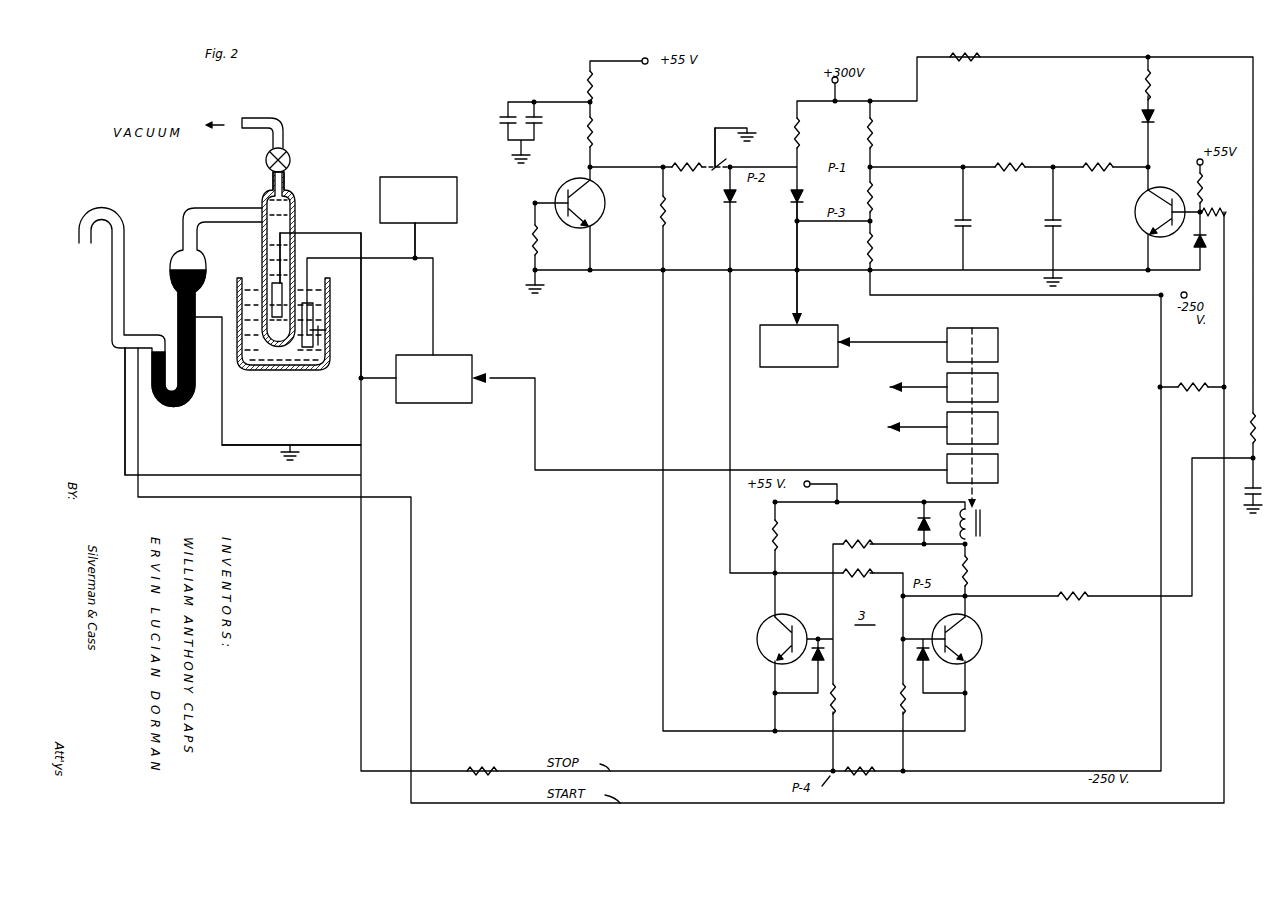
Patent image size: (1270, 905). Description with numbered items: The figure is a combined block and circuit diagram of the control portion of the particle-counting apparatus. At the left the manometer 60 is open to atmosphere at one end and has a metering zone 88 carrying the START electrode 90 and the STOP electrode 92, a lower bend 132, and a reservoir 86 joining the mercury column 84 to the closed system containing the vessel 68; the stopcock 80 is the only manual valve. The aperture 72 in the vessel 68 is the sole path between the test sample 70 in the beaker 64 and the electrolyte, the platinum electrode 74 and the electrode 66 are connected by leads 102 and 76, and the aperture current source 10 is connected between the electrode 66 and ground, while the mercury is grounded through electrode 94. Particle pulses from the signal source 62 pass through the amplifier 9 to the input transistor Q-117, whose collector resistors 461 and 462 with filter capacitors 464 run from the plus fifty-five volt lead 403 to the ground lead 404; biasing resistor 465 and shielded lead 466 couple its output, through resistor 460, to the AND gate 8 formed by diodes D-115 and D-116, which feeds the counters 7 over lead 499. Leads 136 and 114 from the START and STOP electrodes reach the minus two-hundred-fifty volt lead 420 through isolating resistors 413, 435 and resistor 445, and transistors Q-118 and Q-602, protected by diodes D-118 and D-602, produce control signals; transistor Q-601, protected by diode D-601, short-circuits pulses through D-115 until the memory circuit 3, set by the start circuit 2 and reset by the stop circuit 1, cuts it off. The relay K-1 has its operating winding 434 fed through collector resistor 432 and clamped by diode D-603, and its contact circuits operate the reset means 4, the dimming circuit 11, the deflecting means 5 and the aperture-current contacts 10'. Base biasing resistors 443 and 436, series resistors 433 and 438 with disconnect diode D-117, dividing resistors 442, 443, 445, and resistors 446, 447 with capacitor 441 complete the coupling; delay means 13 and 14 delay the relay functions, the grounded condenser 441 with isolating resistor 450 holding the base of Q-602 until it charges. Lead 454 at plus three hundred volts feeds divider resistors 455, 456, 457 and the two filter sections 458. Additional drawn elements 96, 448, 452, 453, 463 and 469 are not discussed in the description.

The stop circuit 1 is at (695, 768).
The start circuit 2 is at (693, 804).
The memory circuit 3 is at (868, 657).
The reset means 4 is at (998, 335).
The deflecting means 5 is at (998, 424).
The counters 7 is at (800, 368).
The AND gate 8 is at (768, 114).
The amplifier 9 is at (424, 176).
The aperture current source 10 is at (438, 369).
The relay contact circuit 10' is at (1027, 464).
The dimming circuit 11 is at (998, 384).
The delay means 13 is at (1210, 476).
The delay means 14 is at (1018, 236).
The manometer 60 is at (129, 269).
The signal source 62 is at (318, 230).
The beaker 64 is at (277, 368).
The electrode 66 is at (318, 337).
The vessel 68 is at (265, 196).
The test sample 70 is at (286, 362).
The aperture 72 is at (312, 317).
The platinum electrode 74 is at (276, 290).
The lead 76 is at (364, 334).
The stopcock 80 is at (291, 160).
The mercury column 84 is at (179, 297).
The reservoir 86 is at (178, 262).
The manometer metering zone 88 is at (138, 334).
The START electrode 90 is at (138, 340).
The STOP electrode 92 is at (120, 339).
The electrode 94 is at (195, 315).
The ground lead 96 is at (344, 448).
The lead 102 is at (420, 251).
The lead 114 is at (124, 413).
The lower bend 132 is at (194, 397).
The lead 136 is at (138, 440).
The +55 volt bias lead 403 is at (636, 60).
The ground lead 404 is at (646, 268).
The isolating resistor 413 is at (498, 763).
The -250 volt lead 420 is at (1005, 295).
The collector resistor 432 is at (972, 563).
The resistor 433 is at (1248, 433).
The relay operating winding 434 is at (975, 536).
The isolating resistor 435 is at (1213, 381).
The base biasing resistor 436 is at (1216, 210).
The resistor 438 is at (1142, 78).
The capacitor 441 is at (1247, 492).
The voltage dividing resistor 442 is at (878, 548).
The base biasing resistor 443 is at (898, 702).
The resistor 445 is at (846, 776).
The resistor 446 is at (876, 575).
The resistor 447 is at (782, 537).
The supply node 448 is at (1152, 56).
The isolating resistor 450 is at (1090, 585).
The resistor 452 is at (801, 134).
The resistor 453 is at (952, 66).
The lead 454 is at (858, 102).
The voltage divider resistor 455 is at (875, 137).
The voltage divider resistor 456 is at (875, 192).
The voltage divider resistor 457 is at (875, 246).
The capacitor-resistor filter sections 458 is at (968, 215).
The resistor 460 is at (702, 157).
The collector resistor 461 is at (593, 81).
The collector resistor 462 is at (609, 132).
The resistor 463 is at (537, 243).
The filter capacitors 464 is at (521, 102).
The biasing resistor 465 is at (656, 216).
The shielded lead 466 is at (722, 167).
The resistor 469 is at (1193, 183).
The lead 499 is at (796, 294).
The input NPN transistor Q-117 is at (558, 197).
The NPN transistor Q-118 is at (1135, 212).
The NPN transistor Q-601 is at (757, 645).
The NPN transistor Q-602 is at (982, 642).
The diode D-115 is at (708, 208).
The diode D-116 is at (784, 212).
The disconnect diode D-117 is at (1154, 84).
The isolating diode D-118 is at (1205, 248).
The isolating diode D-601 is at (810, 667).
The isolating diode D-602 is at (932, 667).
The diode D-603 is at (918, 523).
The relay K-1 is at (973, 512).